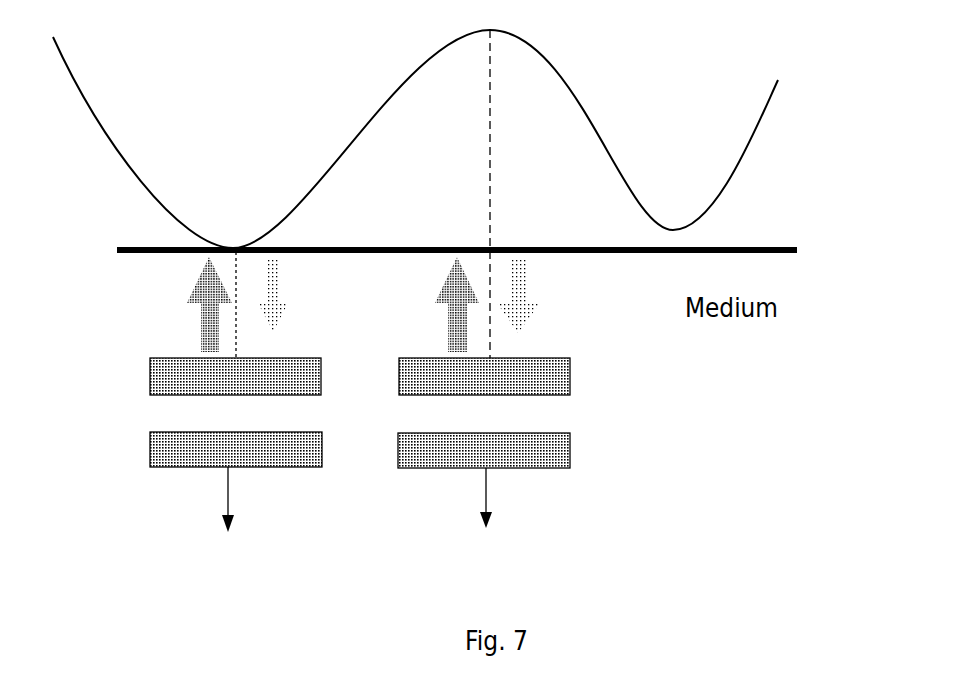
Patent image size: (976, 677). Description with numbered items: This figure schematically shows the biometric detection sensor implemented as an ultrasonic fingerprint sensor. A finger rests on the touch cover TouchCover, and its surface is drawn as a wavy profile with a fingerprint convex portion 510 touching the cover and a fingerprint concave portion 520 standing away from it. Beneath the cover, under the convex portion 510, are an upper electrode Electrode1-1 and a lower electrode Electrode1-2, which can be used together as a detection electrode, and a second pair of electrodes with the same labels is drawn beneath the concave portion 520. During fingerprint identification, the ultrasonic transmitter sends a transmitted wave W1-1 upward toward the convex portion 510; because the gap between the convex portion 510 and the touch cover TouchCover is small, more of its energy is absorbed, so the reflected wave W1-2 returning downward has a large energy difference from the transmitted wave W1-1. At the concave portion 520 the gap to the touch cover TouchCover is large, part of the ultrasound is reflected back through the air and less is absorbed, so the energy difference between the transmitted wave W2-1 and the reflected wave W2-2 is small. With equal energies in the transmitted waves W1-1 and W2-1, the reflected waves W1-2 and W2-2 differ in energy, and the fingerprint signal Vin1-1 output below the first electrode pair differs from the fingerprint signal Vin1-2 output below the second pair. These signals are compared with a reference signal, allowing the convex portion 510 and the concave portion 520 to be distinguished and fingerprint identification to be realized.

The fingerprint convex portion 510 is at (148, 197).
The fingerprint concave portion 520 is at (505, 194).
The touch cover TouchCover is at (528, 253).
The transmitted wave W1-1 is at (178, 304).
The reflected wave W1-2 is at (305, 296).
The transmitted wave W2-1 is at (430, 304).
The reflected wave W2-2 is at (549, 296).
The electrode 1-1 Electrode1-1 is at (360, 376).
The electrode 1-2 Electrode1-2 is at (360, 450).
The fingerprint signal Vin1-1 is at (238, 521).
The fingerprint signal Vin1-2 is at (496, 522).